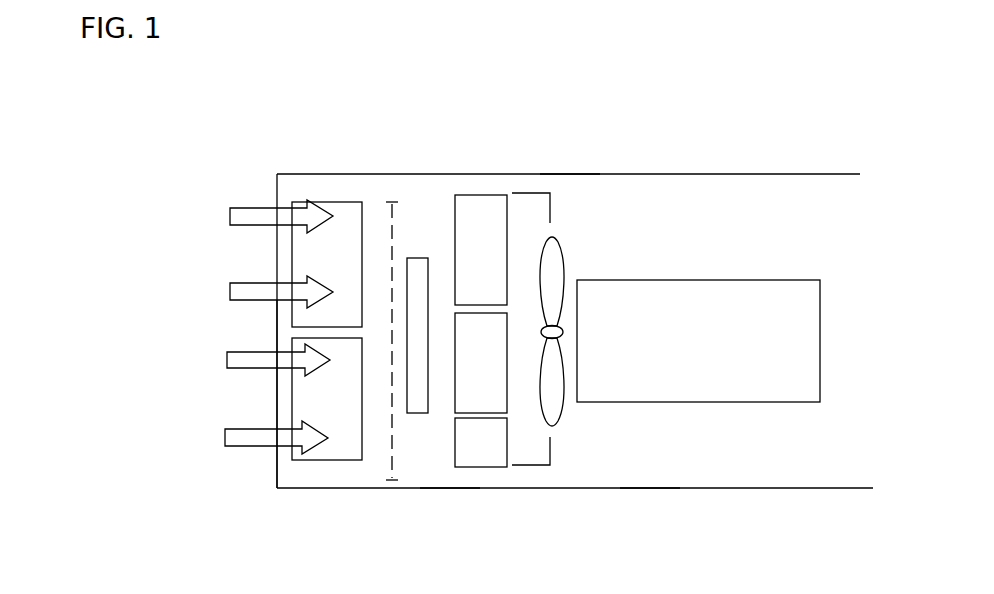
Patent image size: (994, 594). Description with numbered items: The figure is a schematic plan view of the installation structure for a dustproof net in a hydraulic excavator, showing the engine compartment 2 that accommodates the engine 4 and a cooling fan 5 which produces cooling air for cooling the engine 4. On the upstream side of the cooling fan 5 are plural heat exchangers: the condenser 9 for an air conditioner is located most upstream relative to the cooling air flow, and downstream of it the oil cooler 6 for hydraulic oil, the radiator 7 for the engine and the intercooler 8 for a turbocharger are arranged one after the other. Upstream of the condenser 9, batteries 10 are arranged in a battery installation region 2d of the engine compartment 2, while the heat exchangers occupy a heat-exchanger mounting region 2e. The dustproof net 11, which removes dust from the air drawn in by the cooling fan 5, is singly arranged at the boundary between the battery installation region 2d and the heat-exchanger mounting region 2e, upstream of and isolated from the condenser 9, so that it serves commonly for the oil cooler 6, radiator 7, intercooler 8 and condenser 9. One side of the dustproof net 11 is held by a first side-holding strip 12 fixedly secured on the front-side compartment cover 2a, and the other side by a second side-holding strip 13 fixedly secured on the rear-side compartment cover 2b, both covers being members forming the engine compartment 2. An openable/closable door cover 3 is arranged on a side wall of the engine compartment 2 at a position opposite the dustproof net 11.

The engine compartment 2 is at (694, 166).
The front-side compartment cover 2a is at (553, 174).
The rear-side compartment cover 2b is at (647, 488).
The battery installation region 2d is at (308, 473).
The heat-exchanger mounting region 2e is at (448, 478).
The door cover 3 is at (275, 325).
The engine 4 is at (690, 390).
The cooling fan 5 is at (555, 404).
The oil cooler 6 is at (488, 208).
The radiator 7 is at (477, 337).
The intercooler 8 is at (483, 455).
The condenser 9 is at (417, 387).
The batteries 10 is at (307, 253).
The dustproof net 11 is at (390, 233).
The first side-holding strip 12 is at (392, 184).
The second side-holding strip 13 is at (392, 478).